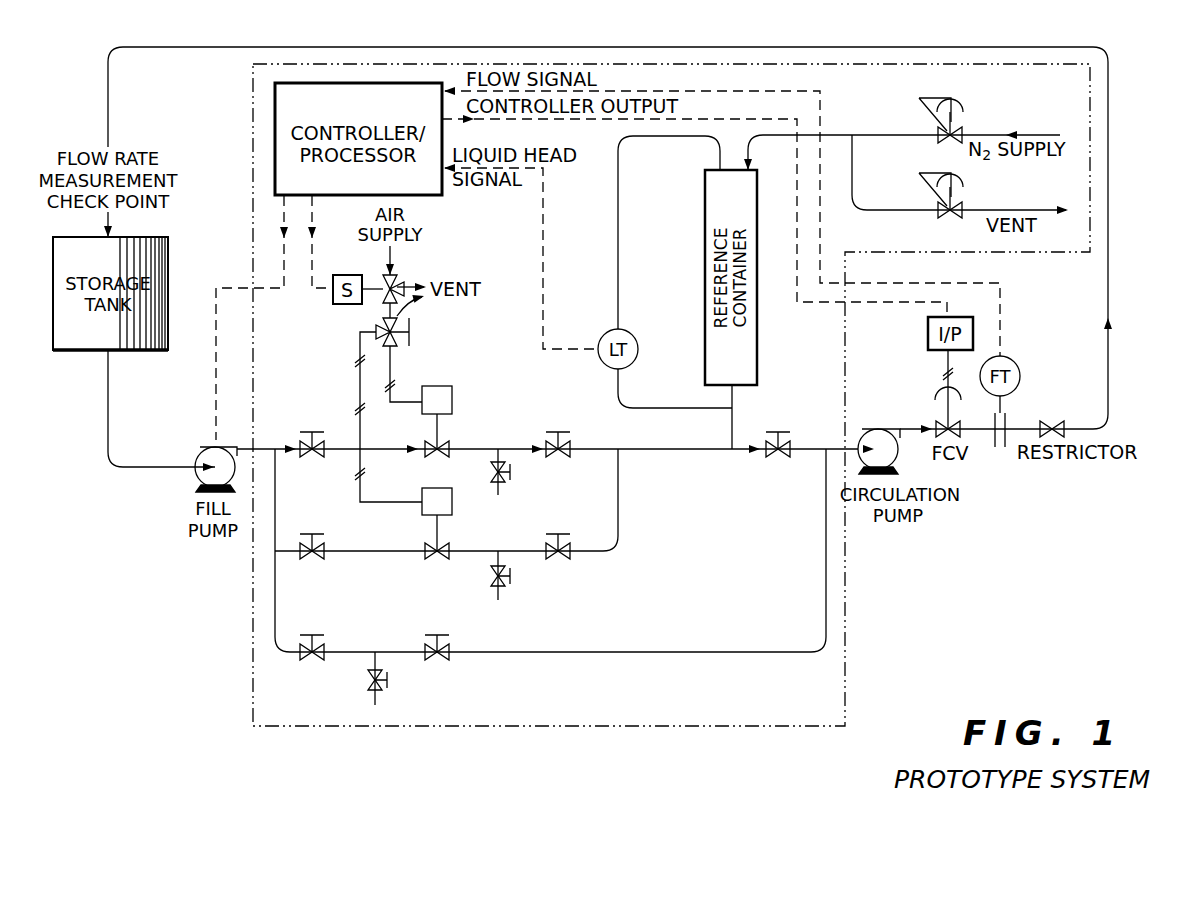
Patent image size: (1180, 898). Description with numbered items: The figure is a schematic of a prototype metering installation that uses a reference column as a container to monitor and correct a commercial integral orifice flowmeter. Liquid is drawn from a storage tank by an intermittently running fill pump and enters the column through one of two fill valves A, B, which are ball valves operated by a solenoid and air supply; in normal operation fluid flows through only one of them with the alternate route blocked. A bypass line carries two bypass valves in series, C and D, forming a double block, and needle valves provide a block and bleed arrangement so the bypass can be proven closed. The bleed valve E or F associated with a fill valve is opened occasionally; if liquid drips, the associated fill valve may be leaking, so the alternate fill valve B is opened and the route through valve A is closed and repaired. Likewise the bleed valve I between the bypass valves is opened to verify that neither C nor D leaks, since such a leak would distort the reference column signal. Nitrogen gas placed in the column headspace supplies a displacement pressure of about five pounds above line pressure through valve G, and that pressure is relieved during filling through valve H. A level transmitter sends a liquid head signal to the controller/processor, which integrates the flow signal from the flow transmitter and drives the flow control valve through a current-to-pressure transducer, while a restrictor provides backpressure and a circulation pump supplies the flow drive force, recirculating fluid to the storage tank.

The fill valve A is at (436, 457).
The fill valve B is at (440, 560).
The bypass valve C is at (315, 662).
The bypass valve D is at (440, 662).
The bleed valve E is at (502, 478).
The bleed valve F is at (503, 588).
The valve G is at (955, 132).
The valve H is at (955, 207).
The bleed valve I is at (382, 694).